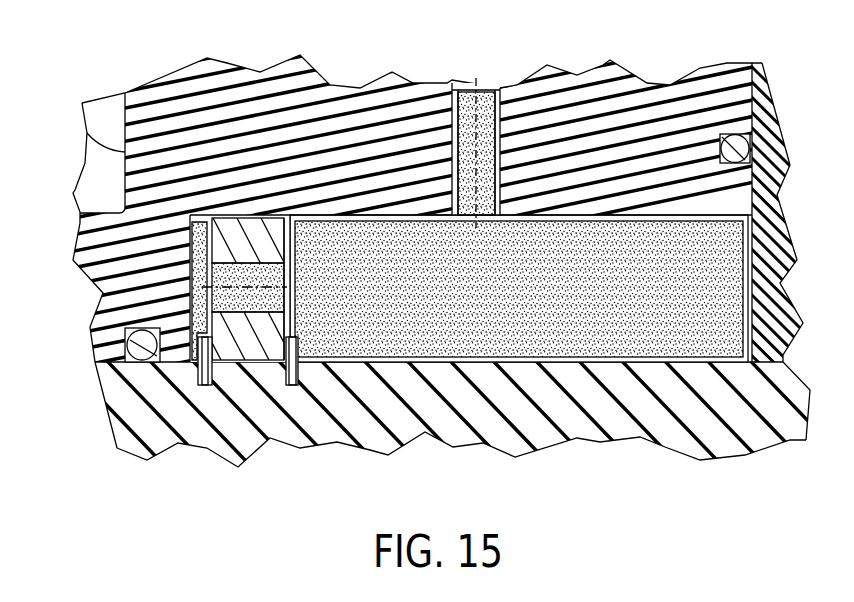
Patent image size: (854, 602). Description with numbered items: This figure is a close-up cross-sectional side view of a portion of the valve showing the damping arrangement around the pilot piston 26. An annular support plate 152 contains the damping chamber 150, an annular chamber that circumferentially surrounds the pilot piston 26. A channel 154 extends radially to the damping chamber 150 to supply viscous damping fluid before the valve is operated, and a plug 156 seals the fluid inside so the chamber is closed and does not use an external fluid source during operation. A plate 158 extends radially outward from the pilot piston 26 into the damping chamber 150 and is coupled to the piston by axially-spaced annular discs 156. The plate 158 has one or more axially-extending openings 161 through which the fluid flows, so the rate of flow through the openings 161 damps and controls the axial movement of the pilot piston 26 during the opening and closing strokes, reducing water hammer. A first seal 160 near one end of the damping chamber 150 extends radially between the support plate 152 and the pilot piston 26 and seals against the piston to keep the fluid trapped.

The pilot piston 26 is at (383, 445).
The damping chamber 150 is at (603, 212).
The support plate 152 is at (293, 105).
The channel 154 is at (482, 115).
The plug 156 is at (293, 372).
The plate 158 is at (250, 353).
The first seal 160 is at (143, 360).
The axially-extending opening 161 is at (243, 270).